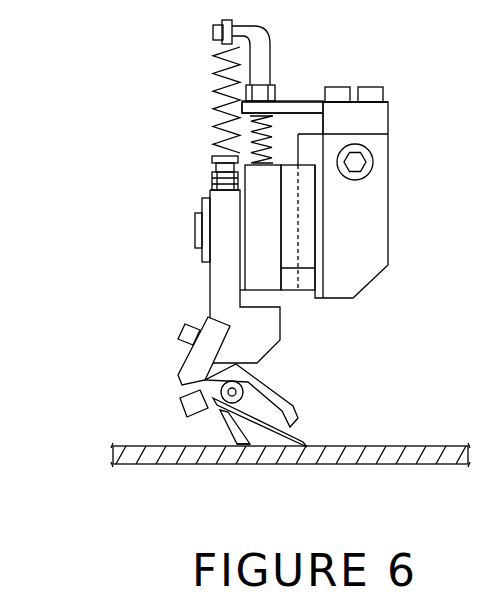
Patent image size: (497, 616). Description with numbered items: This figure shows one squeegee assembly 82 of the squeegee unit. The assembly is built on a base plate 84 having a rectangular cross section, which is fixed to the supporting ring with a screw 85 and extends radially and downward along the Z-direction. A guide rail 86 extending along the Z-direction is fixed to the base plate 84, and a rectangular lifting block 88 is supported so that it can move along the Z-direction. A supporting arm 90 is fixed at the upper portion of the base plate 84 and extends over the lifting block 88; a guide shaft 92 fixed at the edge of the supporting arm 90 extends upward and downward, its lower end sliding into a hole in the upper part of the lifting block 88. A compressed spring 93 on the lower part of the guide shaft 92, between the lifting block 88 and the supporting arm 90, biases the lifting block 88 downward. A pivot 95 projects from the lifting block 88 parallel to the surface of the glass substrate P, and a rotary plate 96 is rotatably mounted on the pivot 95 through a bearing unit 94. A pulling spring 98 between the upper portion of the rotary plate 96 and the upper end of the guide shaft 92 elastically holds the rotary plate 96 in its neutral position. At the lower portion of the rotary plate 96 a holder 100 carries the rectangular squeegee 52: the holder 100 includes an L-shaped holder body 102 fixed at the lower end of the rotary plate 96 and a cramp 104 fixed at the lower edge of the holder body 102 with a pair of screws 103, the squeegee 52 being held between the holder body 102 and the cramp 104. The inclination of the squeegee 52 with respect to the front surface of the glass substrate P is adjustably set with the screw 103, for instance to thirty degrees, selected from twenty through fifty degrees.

The squeegee assembly 82 is at (90, 123).
The base plate 84 is at (378, 218).
The screw 85 is at (372, 165).
The guide rail 86 is at (307, 142).
The lifting block 88 is at (252, 202).
The supporting arm 90 is at (285, 101).
The guide shaft 92 is at (270, 36).
The compressed spring 93 is at (252, 145).
The bearing unit 94 is at (205, 250).
The pivot 95 is at (195, 223).
The rotary plate 96 is at (212, 288).
The pulling spring 98 is at (218, 78).
The holder 100 is at (168, 356).
The holder body 102 is at (262, 391).
The screw 103 is at (180, 410).
The cramp 104 is at (222, 415).
The squeegee 52 is at (307, 445).
The glass substrate P is at (437, 446).